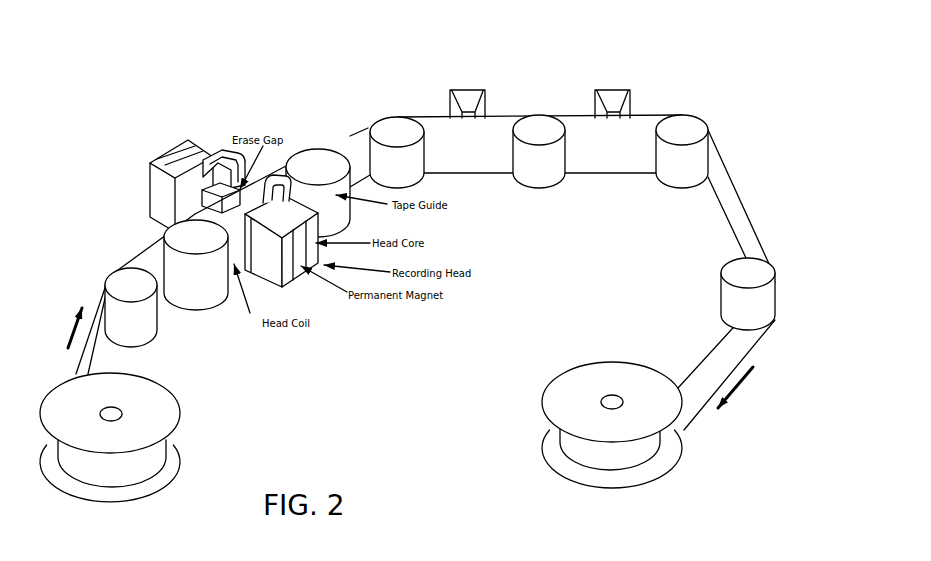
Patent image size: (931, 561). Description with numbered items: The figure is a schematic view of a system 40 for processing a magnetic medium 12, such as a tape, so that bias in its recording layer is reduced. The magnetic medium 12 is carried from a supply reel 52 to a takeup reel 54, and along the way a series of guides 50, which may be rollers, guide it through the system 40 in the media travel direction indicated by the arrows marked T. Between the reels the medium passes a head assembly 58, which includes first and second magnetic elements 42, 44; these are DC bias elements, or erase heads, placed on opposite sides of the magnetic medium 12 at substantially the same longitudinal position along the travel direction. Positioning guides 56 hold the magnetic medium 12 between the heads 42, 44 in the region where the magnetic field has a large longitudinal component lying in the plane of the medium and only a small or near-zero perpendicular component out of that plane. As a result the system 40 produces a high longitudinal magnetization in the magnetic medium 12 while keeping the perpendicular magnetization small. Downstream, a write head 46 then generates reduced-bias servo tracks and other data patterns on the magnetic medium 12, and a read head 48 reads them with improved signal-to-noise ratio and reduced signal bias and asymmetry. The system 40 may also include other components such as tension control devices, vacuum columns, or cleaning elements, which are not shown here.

The system 40 is at (88, 69).
The magnetic medium 12 is at (738, 193).
The first magnetic element 42 is at (303, 288).
The second magnetic element 44 is at (185, 137).
The write head 46 is at (463, 89).
The read head 48 is at (606, 89).
The guides 50 is at (123, 282).
The supply reel 52 is at (167, 400).
The takeup reel 54 is at (580, 378).
The positioning guides 56 is at (204, 288).
The head assembly 58 is at (155, 258).